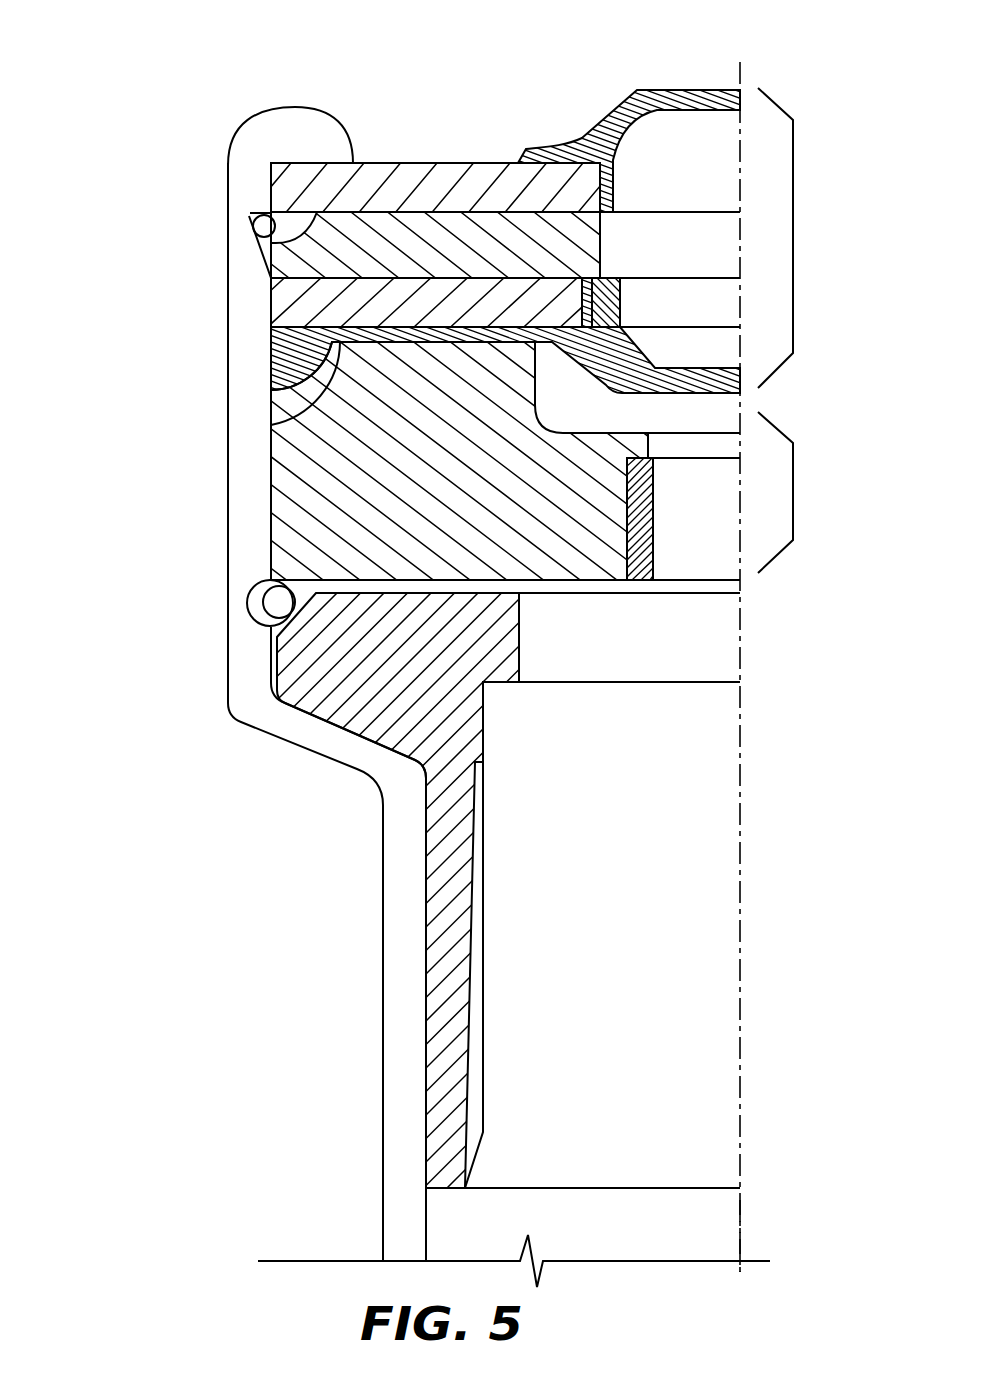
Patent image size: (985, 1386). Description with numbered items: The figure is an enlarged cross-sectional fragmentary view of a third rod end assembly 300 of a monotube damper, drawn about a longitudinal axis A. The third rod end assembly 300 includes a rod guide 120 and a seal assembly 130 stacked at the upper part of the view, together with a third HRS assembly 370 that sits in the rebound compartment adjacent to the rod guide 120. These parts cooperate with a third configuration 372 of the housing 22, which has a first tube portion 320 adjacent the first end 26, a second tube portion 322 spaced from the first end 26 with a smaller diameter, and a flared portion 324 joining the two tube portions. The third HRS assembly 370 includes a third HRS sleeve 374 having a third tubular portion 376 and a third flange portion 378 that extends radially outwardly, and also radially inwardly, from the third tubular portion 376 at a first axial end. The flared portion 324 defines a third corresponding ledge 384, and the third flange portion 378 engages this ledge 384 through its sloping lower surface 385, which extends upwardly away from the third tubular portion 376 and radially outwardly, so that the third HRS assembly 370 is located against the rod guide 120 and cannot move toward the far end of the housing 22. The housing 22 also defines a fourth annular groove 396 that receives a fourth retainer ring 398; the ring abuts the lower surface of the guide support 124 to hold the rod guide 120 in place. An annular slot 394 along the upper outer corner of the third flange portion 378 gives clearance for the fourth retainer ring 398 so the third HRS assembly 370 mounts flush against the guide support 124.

The third rod end assembly 300 is at (117, 64).
The first end 26 is at (230, 137).
The first tube portion 320 is at (240, 377).
The housing 22 is at (201, 461).
The third configuration 372 is at (240, 457).
The guide support 124 is at (310, 492).
The fourth annular groove 396 is at (275, 583).
The fourth retainer ring 398 is at (278, 603).
The annular slot 394 is at (270, 632).
The third HRS assembly 370 is at (267, 665).
The sloping lower surface 385 is at (322, 720).
The flared portion 324 is at (367, 773).
The second tube portion 322 is at (392, 1057).
The third corresponding ledge 384 is at (352, 733).
The third flange portion 378 is at (500, 632).
The third tubular portion 376 is at (452, 878).
The third HRS sleeve 374 is at (484, 778).
The seal assembly 130 is at (793, 233).
The rod guide 120 is at (793, 490).
The longitudinal axis A is at (744, 866).